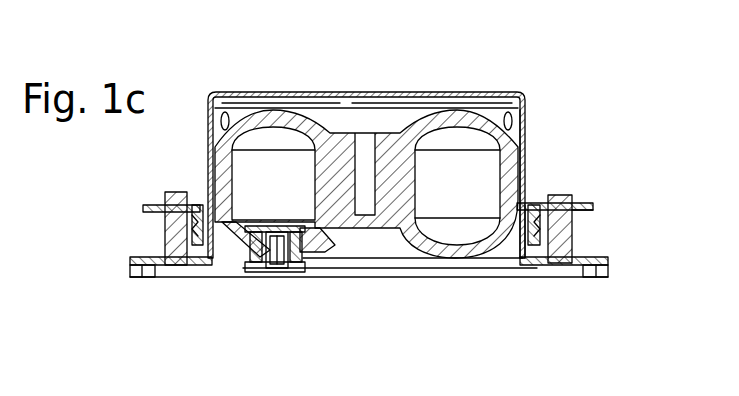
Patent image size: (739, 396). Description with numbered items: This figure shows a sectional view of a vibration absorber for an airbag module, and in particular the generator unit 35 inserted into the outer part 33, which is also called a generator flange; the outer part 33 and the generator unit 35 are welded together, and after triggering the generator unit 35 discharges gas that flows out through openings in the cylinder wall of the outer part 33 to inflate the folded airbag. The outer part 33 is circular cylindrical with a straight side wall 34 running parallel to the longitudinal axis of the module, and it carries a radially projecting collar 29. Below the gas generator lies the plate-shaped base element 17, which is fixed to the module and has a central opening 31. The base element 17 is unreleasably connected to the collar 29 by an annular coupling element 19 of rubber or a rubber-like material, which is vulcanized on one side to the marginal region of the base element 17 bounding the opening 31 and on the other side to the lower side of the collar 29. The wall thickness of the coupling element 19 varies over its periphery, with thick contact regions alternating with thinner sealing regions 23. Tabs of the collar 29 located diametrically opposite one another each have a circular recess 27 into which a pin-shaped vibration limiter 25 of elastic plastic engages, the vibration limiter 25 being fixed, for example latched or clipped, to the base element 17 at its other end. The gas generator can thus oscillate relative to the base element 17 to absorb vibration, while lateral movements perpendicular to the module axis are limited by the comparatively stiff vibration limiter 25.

The base element 17 is at (128, 274).
The coupling element 19 is at (518, 248).
The sealing regions 23 is at (205, 205).
The vibration limiter 25 is at (168, 232).
The circular recess 27 is at (160, 205).
The collar 29 is at (590, 208).
The central opening 31 is at (212, 277).
The outer part 33 is at (493, 93).
The straight side wall 34 is at (525, 133).
The gas generator unit 35 is at (393, 220).